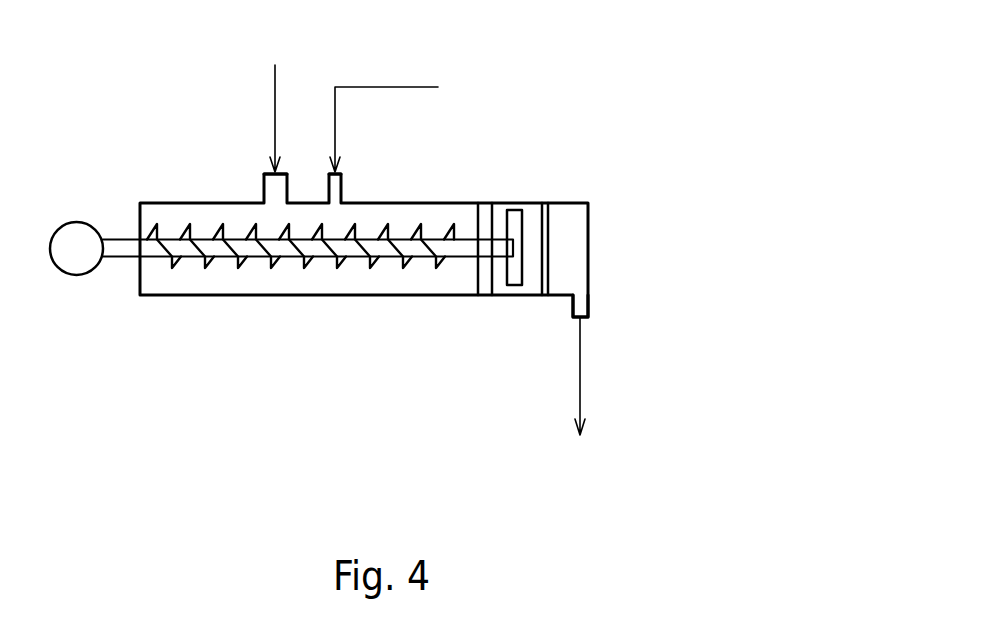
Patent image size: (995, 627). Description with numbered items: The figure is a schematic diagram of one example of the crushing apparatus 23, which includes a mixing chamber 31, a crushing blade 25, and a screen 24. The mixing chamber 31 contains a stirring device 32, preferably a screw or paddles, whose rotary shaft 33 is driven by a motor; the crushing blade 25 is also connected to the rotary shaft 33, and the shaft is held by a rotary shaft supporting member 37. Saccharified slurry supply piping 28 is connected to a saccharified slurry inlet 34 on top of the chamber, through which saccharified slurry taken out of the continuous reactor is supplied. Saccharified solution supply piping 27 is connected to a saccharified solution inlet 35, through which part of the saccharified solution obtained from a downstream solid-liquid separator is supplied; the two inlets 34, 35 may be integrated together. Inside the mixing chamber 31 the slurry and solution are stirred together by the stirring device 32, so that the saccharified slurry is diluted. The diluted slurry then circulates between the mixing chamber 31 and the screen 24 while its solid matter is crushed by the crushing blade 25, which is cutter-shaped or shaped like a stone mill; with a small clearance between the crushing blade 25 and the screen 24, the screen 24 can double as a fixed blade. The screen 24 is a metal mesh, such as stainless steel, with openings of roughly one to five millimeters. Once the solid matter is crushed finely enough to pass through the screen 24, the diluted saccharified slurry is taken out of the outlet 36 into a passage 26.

The crushing apparatus 23 is at (192, 296).
The screen 24 is at (547, 203).
The crushing blade 25 is at (515, 210).
The passage 26 is at (581, 371).
The saccharified solution supply piping 27 is at (390, 87).
The saccharified slurry supply piping 28 is at (275, 130).
The mixing chamber 31 is at (281, 307).
The stirring device 32 is at (270, 283).
The rotary shaft 33 is at (120, 250).
The saccharified slurry inlet 34 is at (264, 188).
The saccharified solution inlet 35 is at (341, 188).
The outlet of crushing apparatus 36 is at (590, 304).
The rotary shaft supporting member 37 is at (485, 285).